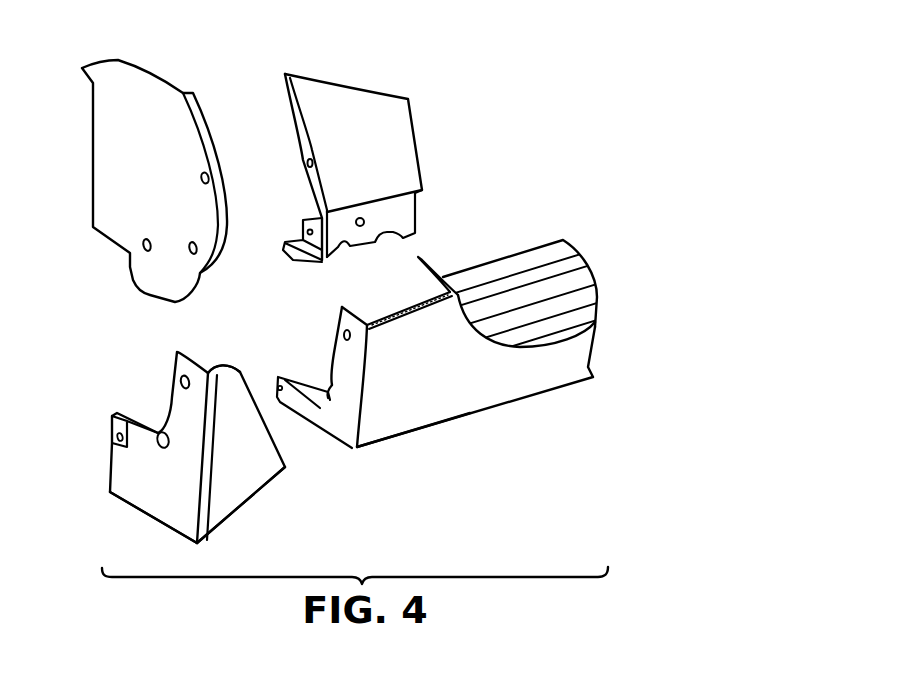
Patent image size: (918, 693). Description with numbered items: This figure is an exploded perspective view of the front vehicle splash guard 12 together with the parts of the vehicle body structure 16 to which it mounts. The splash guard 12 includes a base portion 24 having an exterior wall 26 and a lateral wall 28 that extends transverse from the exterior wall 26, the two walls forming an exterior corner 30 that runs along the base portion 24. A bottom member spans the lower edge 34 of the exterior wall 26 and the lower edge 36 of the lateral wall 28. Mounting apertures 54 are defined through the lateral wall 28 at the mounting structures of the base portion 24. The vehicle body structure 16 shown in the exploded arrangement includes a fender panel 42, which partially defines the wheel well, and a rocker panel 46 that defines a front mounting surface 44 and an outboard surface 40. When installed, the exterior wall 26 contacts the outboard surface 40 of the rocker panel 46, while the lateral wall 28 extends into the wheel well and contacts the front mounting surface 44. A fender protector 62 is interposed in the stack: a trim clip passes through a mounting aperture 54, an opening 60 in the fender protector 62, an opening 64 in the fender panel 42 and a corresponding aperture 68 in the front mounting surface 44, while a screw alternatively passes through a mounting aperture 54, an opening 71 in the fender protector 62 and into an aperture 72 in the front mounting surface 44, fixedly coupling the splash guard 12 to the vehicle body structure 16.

The front vehicle splash guard 12 is at (100, 513).
The vehicle body structure 16 is at (500, 348).
The base portion 24 is at (188, 453).
The exterior wall 26 is at (237, 415).
The lateral wall 28 is at (133, 477).
The exterior corner 30 is at (217, 453).
The lower edge of the exterior wall 34 is at (233, 517).
The lower edge of the lateral wall 36 is at (153, 525).
The outboard surface 40 is at (428, 388).
The fender panel 42 is at (393, 147).
The front mounting surface 44 is at (342, 418).
The rocker panel 46 is at (500, 375).
The mounting aperture 54 is at (159, 436).
The opening in the fender protector 60 is at (202, 175).
The fender protector 62 is at (122, 137).
The opening in the fender panel 64 is at (307, 167).
The aperture in the front mounting surface 68 is at (342, 331).
The opening in the fender protector 71 is at (189, 248).
The aperture in the front mounting surface 72 is at (292, 392).